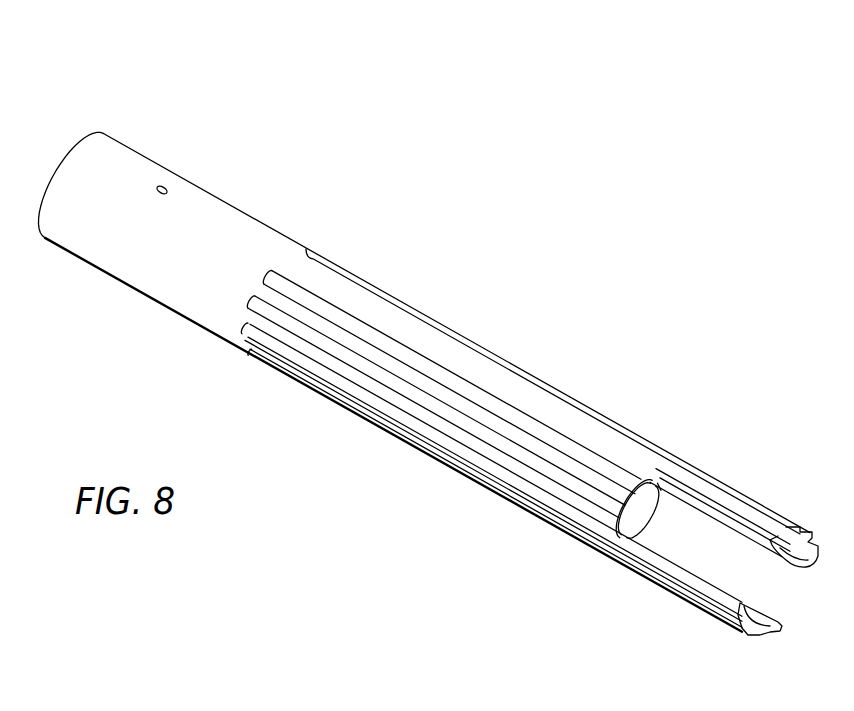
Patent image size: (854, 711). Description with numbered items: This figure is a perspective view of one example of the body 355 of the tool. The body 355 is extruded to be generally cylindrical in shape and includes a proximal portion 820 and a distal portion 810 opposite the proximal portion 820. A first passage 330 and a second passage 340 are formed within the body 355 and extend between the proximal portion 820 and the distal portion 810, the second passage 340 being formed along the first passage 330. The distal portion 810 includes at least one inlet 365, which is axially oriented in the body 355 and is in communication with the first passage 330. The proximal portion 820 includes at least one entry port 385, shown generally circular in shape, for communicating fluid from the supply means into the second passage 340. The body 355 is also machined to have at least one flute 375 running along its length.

The proximal portion 820 is at (153, 129).
The entry port 385 is at (165, 184).
The flute 375 is at (478, 394).
The body 355 is at (289, 537).
The inlet 365 is at (700, 556).
The first passage 330 is at (652, 505).
The distal portion 810 is at (763, 487).
The second passage 340 is at (785, 526).